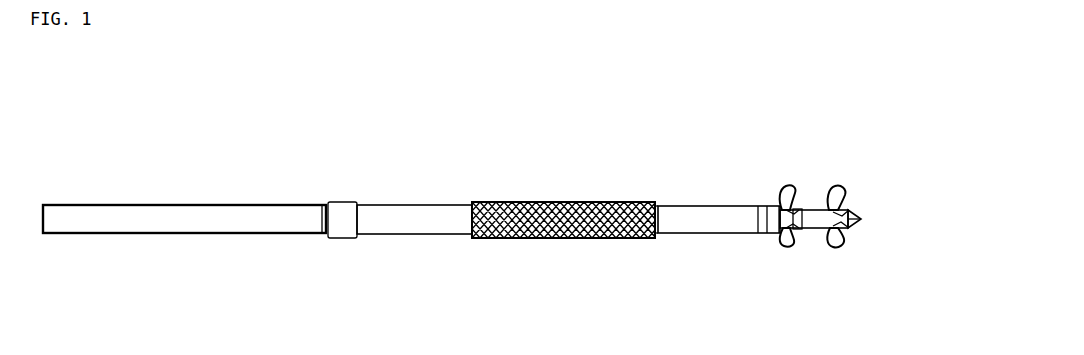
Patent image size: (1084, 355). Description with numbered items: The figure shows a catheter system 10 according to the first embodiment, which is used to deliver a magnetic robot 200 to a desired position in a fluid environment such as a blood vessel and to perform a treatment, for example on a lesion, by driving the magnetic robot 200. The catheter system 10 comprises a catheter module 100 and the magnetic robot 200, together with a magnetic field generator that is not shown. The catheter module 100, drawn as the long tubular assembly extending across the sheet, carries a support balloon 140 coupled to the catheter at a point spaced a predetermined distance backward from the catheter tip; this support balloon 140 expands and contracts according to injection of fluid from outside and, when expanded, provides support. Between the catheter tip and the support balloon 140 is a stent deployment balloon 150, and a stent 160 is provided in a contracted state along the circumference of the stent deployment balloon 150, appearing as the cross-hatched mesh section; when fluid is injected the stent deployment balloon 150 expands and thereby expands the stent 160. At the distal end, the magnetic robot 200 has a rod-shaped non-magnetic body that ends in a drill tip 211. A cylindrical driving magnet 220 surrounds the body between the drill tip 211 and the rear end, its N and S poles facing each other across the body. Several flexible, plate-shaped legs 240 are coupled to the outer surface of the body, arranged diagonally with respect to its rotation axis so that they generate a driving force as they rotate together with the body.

The catheter system 10 is at (802, 80).
The catheter module 100 is at (525, 183).
The support balloon 140 is at (341, 201).
The stent deployment balloon 150 is at (657, 220).
The stent 160 is at (588, 212).
The magnetic robot 200 is at (856, 168).
The drill tip 211 is at (862, 214).
The driving magnet 220 is at (814, 212).
The leg 240 is at (840, 248).